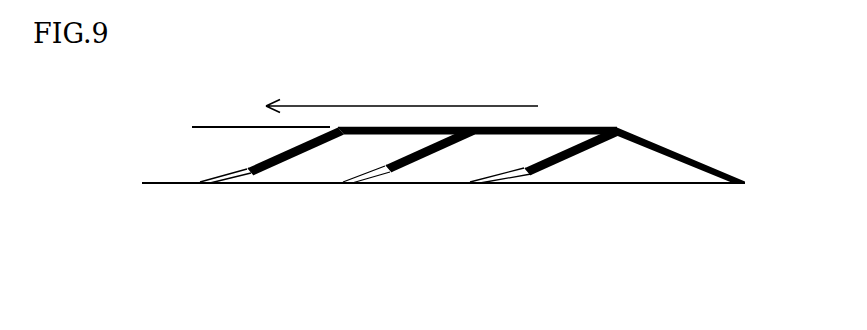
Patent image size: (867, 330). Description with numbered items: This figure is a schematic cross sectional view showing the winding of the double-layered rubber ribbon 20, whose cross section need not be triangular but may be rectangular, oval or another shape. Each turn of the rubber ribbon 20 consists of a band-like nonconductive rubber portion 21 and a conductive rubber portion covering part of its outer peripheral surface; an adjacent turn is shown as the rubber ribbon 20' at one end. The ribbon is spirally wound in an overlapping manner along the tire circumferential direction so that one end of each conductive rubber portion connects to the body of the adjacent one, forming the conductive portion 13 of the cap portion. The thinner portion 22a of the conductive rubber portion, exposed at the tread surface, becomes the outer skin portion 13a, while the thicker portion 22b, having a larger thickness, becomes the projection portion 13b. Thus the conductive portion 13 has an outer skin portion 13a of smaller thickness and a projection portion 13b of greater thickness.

The rubber ribbon 20 is at (443, 226).
The substrate end portion 20' is at (171, 226).
The nonconductive rubber portion 21 is at (213, 133).
The conductive portion 13 is at (587, 128).
The outer skin portion 13a is at (423, 133).
The projection portion 13b is at (268, 172).
The portion of the conductive rubber portion forming the outer skin portion 22a is at (363, 133).
The portion of the conductive rubber portion forming the projection portion 22b is at (397, 172).